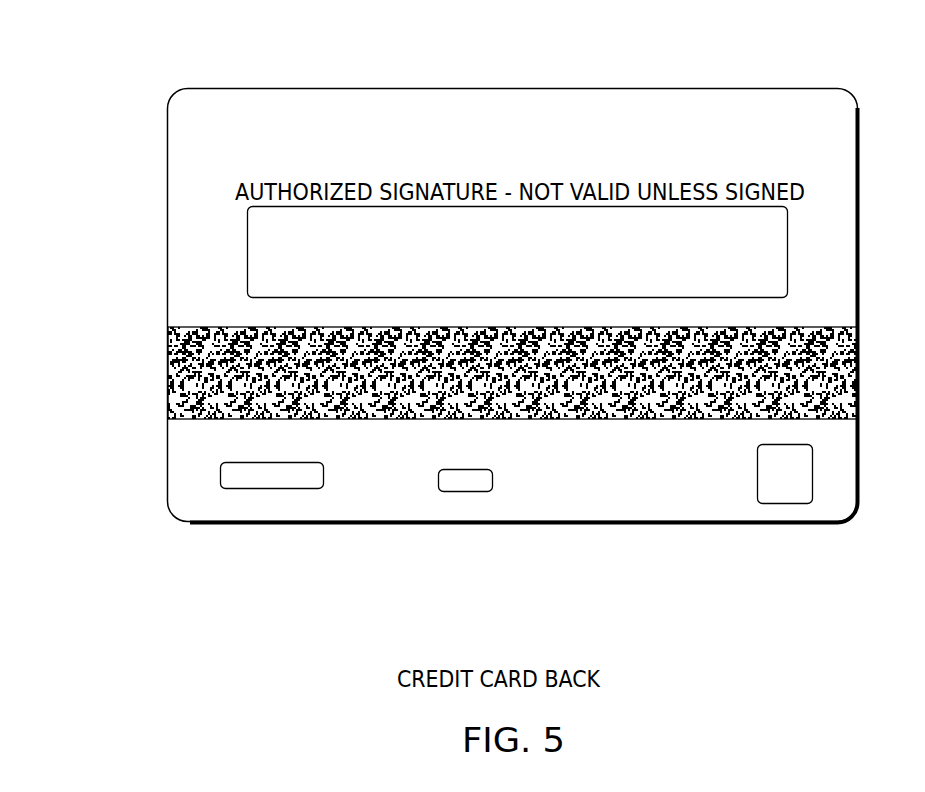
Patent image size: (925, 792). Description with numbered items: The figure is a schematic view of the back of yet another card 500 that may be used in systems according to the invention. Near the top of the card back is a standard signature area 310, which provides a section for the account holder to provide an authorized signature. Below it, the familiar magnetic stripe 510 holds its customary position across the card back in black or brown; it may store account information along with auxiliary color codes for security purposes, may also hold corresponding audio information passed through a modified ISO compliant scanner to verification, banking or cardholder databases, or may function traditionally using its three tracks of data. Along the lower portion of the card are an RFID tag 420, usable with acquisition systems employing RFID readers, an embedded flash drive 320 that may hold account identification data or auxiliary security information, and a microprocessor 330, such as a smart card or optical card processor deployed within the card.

The card 500 is at (500, 87).
The signature area 310 is at (258, 255).
The magnetic stripe 510 is at (182, 366).
The RFID tag 420 is at (278, 489).
The embedded flash drive 320 is at (462, 492).
The microprocessor 330 is at (783, 493).